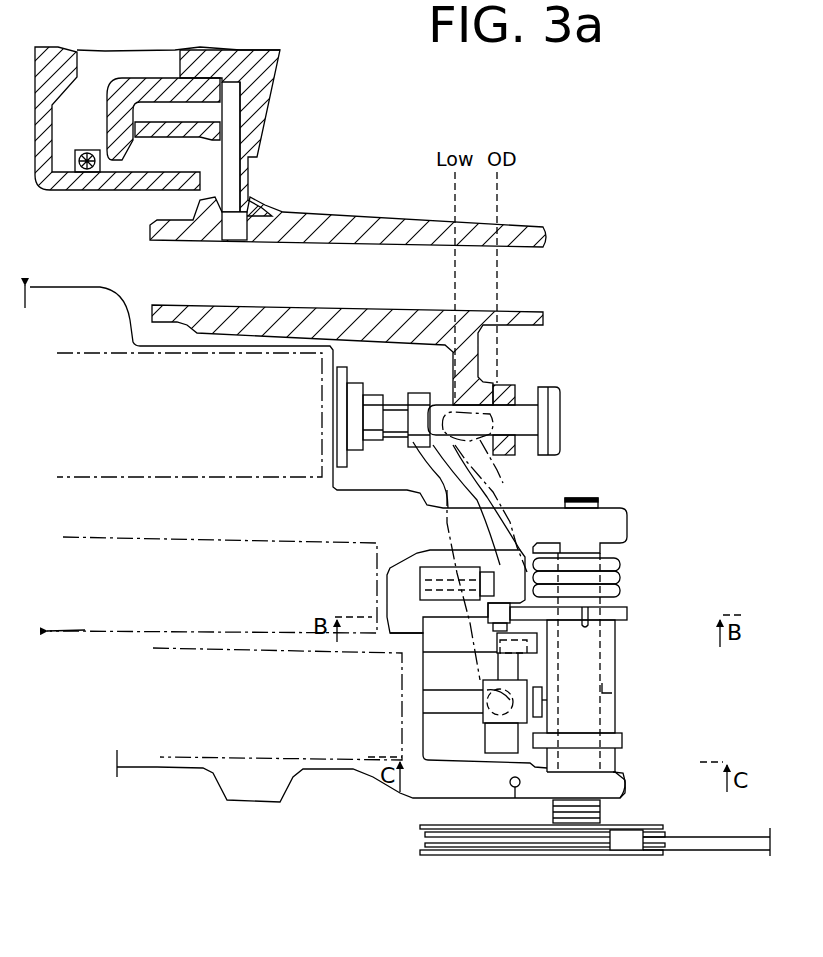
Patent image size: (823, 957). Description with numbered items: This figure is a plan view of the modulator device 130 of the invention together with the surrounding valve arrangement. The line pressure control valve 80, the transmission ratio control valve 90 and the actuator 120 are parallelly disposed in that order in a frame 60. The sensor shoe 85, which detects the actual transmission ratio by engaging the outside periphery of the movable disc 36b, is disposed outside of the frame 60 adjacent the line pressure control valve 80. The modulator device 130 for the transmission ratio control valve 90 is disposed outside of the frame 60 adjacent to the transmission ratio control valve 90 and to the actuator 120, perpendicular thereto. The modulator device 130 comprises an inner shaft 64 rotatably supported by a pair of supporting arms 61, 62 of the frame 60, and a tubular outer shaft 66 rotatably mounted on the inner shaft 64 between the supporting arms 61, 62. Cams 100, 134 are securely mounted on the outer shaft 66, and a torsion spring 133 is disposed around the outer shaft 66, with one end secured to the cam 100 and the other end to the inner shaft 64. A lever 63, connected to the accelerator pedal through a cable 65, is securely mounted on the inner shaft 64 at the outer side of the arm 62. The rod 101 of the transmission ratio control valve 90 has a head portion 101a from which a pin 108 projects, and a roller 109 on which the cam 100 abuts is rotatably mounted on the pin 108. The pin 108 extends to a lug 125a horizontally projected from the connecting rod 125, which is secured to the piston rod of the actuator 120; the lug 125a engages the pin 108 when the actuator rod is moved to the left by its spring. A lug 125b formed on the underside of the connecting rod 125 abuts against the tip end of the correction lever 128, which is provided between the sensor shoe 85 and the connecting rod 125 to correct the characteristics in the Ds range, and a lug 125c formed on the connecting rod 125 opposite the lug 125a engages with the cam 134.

The movable disc 36b is at (262, 90).
The sensor shoe 85 is at (359, 230).
The line pressure control valve 80 is at (148, 358).
The transmission ratio control valve 90 is at (165, 538).
The actuator 120 is at (237, 653).
The frame 60 is at (157, 770).
The supporting arm 61 is at (627, 527).
The supporting arm 62 is at (623, 790).
The lever 63 is at (470, 860).
The inner shaft 64 is at (613, 692).
The cable 65 is at (727, 853).
The tubular outer shaft 66 is at (617, 650).
The cam 100 is at (627, 613).
The rod 101 is at (390, 597).
The head portion 101a is at (462, 530).
The pin 108 is at (527, 640).
The roller 109 is at (495, 616).
The connecting rod 125 is at (545, 712).
The lug 125a is at (540, 677).
The lug 125b is at (483, 718).
The lug 125c is at (510, 745).
The correction lever 128 is at (483, 498).
The modulator device 130 is at (650, 579).
The torsion spring 133 is at (623, 562).
The cam 134 is at (623, 743).